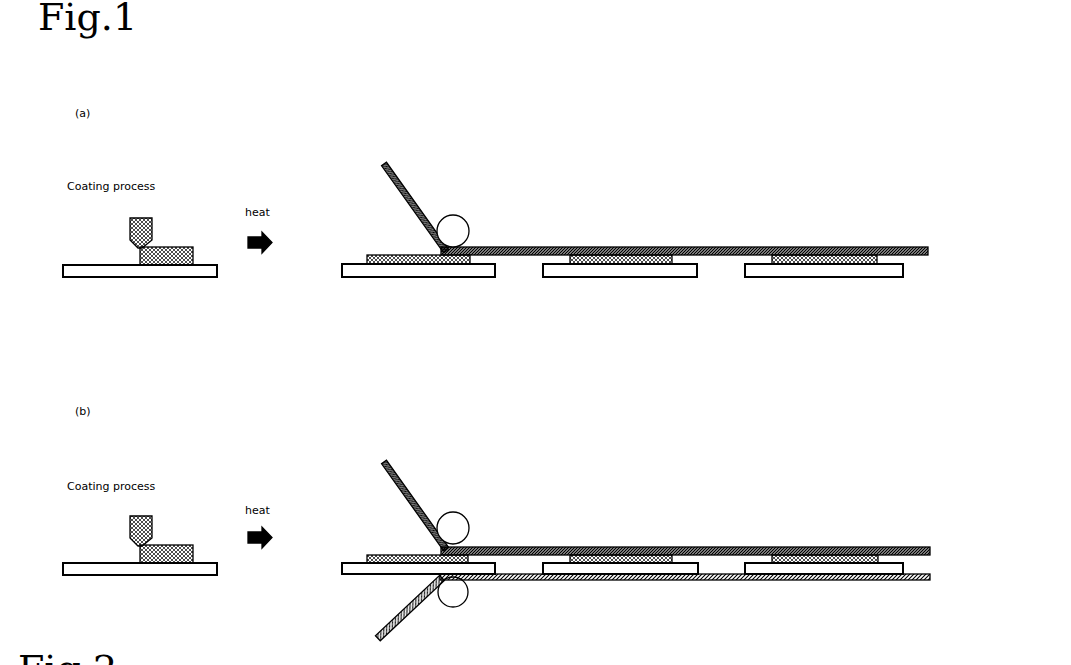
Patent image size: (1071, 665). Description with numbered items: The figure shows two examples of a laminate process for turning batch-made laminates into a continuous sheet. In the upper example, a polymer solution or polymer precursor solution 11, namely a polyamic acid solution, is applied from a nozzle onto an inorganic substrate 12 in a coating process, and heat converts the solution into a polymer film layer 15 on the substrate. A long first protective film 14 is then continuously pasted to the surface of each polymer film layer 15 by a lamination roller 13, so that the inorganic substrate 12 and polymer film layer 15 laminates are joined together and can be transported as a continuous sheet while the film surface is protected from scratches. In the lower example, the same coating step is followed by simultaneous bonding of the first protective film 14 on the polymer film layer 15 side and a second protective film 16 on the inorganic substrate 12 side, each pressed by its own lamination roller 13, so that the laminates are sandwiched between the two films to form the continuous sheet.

The polymer solution or polymer precursor solution 11 is at (163, 247).
The inorganic substrate 12 is at (77, 279).
The lamination roller 13 is at (453, 229).
The first protective film 14 is at (512, 248).
The polymer film layer 15 is at (443, 266).
The second protective film 16 is at (528, 581).